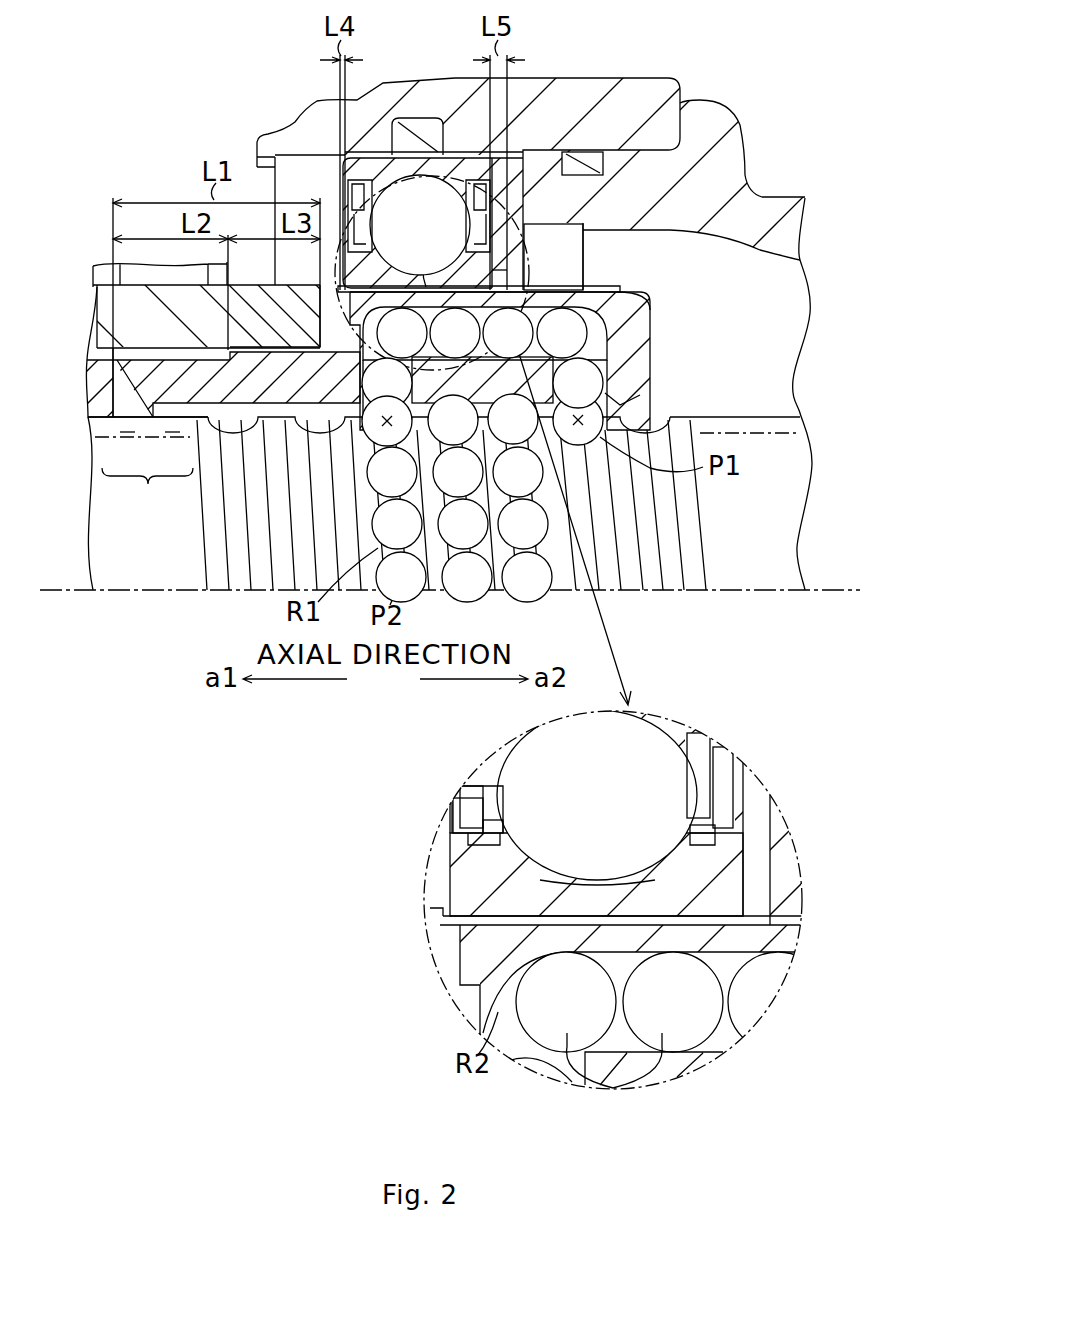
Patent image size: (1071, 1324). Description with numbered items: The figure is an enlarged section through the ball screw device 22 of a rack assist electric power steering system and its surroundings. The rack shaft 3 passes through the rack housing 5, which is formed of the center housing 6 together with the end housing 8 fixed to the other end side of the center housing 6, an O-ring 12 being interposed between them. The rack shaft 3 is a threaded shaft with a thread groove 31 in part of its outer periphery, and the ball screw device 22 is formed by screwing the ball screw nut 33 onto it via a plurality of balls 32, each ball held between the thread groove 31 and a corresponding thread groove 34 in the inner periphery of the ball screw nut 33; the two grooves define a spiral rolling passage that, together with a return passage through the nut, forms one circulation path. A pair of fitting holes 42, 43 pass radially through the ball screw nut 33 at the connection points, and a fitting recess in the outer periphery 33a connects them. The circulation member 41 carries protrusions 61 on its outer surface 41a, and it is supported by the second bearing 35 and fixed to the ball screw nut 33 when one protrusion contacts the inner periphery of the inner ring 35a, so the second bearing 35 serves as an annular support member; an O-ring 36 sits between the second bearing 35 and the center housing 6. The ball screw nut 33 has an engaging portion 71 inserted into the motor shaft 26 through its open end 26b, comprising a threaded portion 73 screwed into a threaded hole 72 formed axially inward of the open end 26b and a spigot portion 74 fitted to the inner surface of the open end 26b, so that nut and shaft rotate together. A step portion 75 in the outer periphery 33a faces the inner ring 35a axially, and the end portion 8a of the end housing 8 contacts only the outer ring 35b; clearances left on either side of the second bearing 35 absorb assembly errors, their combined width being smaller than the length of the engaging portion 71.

The rack shaft 3 is at (95, 560).
The rack housing 5 is at (535, 535).
The center housing 6 is at (262, 137).
The end housing 8 is at (535, 535).
The end portion 8a is at (647, 157).
The O-ring 12 is at (585, 152).
The ball screw device 22 is at (680, 293).
The motor shaft 26 is at (174, 311).
The open end 26b is at (96, 330).
The thread groove 31 is at (670, 506).
The balls 32 is at (528, 560).
The ball screw nut 33 is at (535, 662).
The outer periphery 33a is at (632, 290).
The thread groove 34 is at (650, 398).
The second bearing 35 is at (347, 148).
The inner ring 35a is at (507, 273).
The outer ring 35b is at (497, 172).
The O-ring 36 is at (417, 120).
The circulation member 41 is at (597, 288).
The outer surface 41a is at (773, 913).
The fitting hole 42 is at (652, 366).
The fitting hole 43 is at (343, 370).
The protrusions 61 is at (598, 882).
The engaging portion 71 is at (147, 461).
The threaded hole 72 is at (87, 376).
The threaded portion 73 is at (130, 412).
The spigot portion 74 is at (175, 412).
The step portion 75 is at (300, 320).